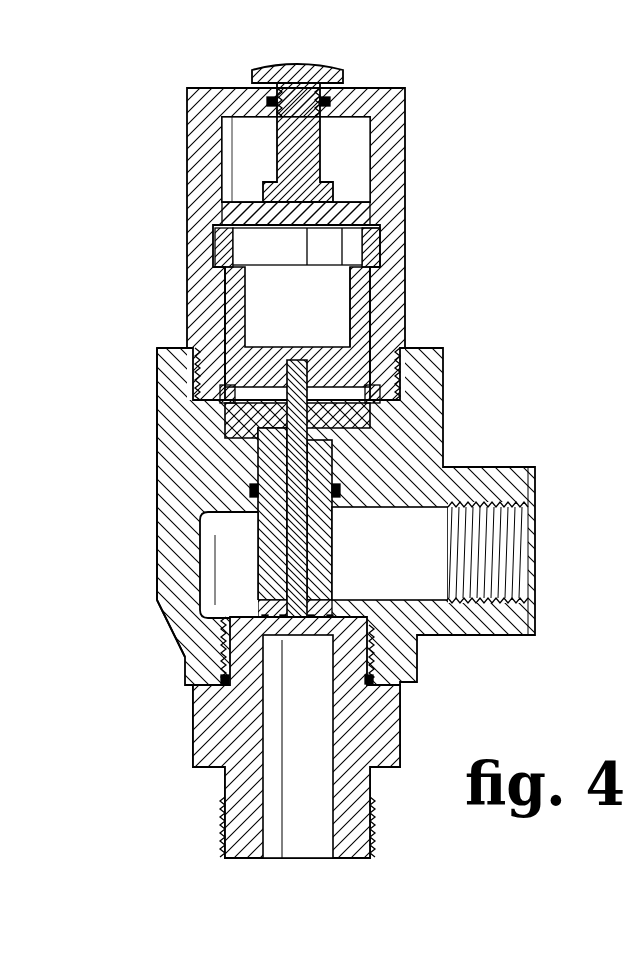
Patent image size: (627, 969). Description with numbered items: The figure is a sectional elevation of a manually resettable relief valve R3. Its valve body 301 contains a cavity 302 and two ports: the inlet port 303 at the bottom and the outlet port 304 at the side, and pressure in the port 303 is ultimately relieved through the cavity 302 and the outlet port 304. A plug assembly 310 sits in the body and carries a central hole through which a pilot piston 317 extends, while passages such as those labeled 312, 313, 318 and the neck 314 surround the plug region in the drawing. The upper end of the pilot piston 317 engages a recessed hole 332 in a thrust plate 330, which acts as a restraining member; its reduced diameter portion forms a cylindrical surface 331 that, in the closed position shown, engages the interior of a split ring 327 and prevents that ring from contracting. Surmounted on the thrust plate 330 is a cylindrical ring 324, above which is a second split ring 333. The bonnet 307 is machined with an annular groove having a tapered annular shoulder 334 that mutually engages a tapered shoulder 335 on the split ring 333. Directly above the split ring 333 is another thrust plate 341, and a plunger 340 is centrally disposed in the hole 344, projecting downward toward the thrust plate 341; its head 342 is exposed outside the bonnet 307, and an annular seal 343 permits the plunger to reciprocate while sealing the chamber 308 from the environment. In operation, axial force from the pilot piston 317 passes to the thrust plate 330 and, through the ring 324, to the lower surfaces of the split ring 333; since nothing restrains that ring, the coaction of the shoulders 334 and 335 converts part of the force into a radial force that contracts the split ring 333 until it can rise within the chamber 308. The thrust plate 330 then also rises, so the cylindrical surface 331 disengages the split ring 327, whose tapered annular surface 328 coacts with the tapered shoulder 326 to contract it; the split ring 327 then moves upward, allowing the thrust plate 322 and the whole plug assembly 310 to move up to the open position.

The valve body 301 is at (178, 533).
The cavity 302 is at (207, 573).
The port 303 is at (324, 830).
The outlet port 304 is at (508, 578).
The bonnet 307 is at (395, 197).
The chamber 308 is at (357, 296).
The plug assembly 310 is at (340, 541).
The chamber 312 is at (282, 507).
The passage 313 is at (277, 468).
The threaded neck 314 is at (335, 618).
The pilot piston 317 is at (298, 583).
The bore 318 is at (276, 642).
The thrust plate 322 is at (258, 470).
The cylindrical ring 324 is at (358, 318).
The tapered shoulder 326 is at (375, 402).
The split ring 327 is at (232, 416).
The tapered annular surface 328 is at (400, 367).
The thrust plate 330 is at (243, 363).
The cylindrical surface 331 is at (220, 392).
The recessed hole 332 is at (294, 360).
The split ring 333 is at (232, 246).
The tapered annular shoulder 334 is at (382, 248).
The tapered shoulder 335 is at (380, 224).
The plunger 340 is at (312, 168).
The thrust plate 341 is at (388, 172).
The head 342 is at (318, 62).
The annular seal 343 is at (330, 100).
The hole 344 is at (283, 115).
The relief valve R3 is at (152, 497).